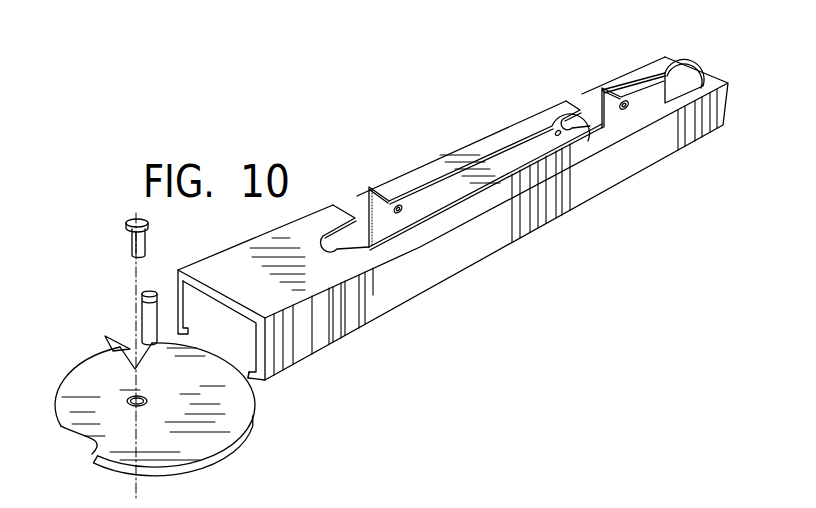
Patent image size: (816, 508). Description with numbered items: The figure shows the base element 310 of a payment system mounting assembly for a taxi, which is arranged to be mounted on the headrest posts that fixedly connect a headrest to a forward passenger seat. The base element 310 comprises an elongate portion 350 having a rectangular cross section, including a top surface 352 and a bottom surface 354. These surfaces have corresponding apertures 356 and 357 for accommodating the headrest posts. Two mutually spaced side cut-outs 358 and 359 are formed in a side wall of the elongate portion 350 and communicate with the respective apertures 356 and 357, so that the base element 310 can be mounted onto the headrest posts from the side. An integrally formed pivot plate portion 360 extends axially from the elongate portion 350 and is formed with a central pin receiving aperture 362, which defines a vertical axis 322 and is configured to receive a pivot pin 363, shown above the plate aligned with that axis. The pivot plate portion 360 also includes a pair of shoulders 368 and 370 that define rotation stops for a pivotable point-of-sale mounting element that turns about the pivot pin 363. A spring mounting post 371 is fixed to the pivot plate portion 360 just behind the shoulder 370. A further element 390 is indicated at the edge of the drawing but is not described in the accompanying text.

The base element 310 is at (354, 358).
The vertical axis 322 is at (133, 368).
The elongate portion 350 is at (557, 113).
The top surface 352 is at (215, 270).
The bottom surface 354 is at (241, 341).
The aperture 356 is at (427, 197).
The aperture 357 is at (633, 121).
The side cut-out 358 is at (360, 214).
The side cut-out 359 is at (596, 103).
The pivot plate portion 360 is at (78, 393).
The central pin receiving aperture 362 is at (147, 404).
The pivot pin 363 is at (132, 241).
The shoulder 368 is at (83, 450).
The shoulder 370 is at (112, 339).
The spring mounting post 371 is at (146, 318).
The assembly 390 is at (614, 501).